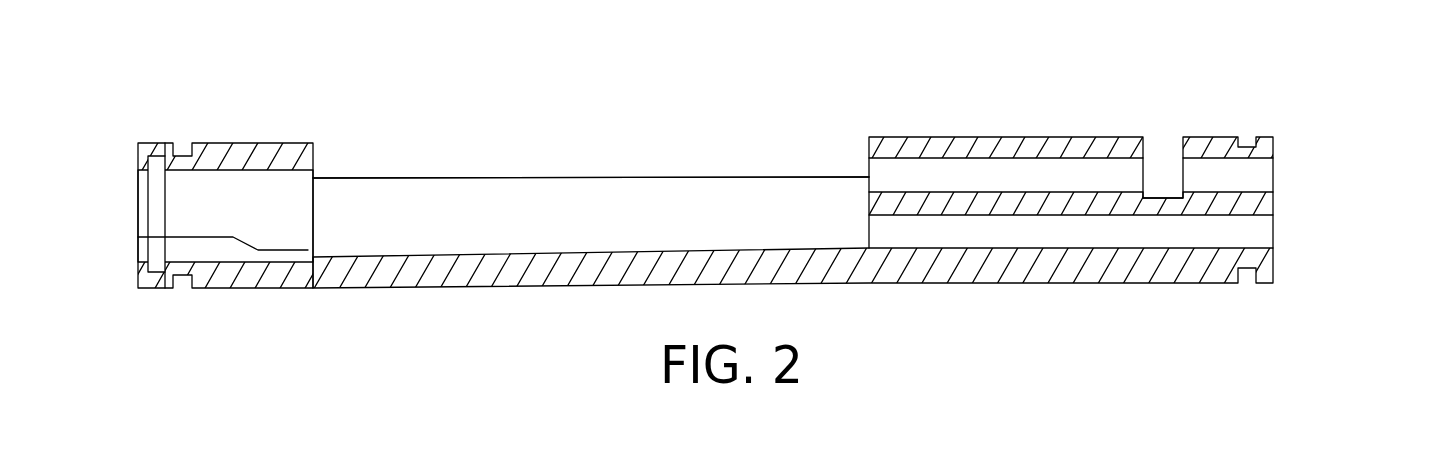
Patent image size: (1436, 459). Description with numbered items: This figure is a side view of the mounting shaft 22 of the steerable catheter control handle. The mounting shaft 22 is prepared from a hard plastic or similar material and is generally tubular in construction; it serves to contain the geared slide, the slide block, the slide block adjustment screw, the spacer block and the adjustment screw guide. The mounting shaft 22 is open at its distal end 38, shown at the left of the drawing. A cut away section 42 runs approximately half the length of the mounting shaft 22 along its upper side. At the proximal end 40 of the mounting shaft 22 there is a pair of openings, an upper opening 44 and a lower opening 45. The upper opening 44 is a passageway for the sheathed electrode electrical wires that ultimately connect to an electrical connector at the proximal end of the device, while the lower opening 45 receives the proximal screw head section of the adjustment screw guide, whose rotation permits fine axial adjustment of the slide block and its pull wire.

The mounting shaft 22 is at (537, 131).
The distal end 38 is at (127, 206).
The cut away section 42 is at (770, 150).
The upper opening 44 is at (1267, 167).
The proximal end 40 is at (1280, 209).
The lower opening 45 is at (1268, 224).